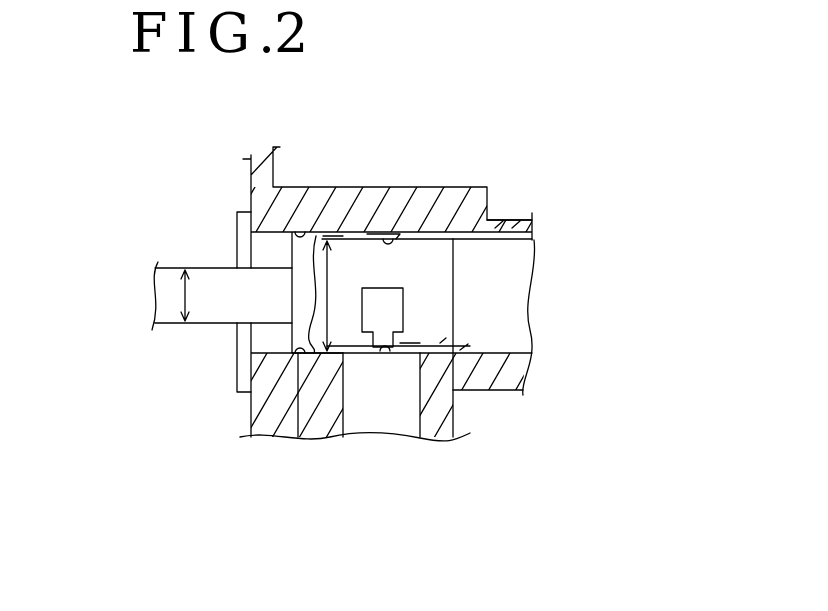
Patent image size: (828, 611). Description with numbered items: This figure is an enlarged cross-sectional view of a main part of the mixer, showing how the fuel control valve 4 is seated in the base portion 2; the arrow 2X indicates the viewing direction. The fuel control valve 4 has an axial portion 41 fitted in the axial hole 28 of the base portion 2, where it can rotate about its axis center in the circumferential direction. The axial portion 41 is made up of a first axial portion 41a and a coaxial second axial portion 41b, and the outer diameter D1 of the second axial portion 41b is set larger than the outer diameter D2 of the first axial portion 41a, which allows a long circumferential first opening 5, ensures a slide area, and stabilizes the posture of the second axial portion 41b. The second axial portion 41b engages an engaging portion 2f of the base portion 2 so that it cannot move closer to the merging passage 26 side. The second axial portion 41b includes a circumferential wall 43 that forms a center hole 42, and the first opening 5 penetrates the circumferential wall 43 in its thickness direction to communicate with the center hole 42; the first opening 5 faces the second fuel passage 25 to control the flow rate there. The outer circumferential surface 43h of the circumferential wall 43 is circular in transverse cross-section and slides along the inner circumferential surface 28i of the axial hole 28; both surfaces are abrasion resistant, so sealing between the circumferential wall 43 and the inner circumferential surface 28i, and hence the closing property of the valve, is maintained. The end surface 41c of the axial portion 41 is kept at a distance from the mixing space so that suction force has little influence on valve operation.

The base portion 2 is at (525, 377).
The engaging portion 2f is at (482, 240).
The view direction 2X is at (565, 357).
The fuel control valve 4 is at (135, 304).
The first opening 5 is at (383, 355).
The second fuel passage 25 is at (360, 433).
The merging passage 26 is at (520, 297).
The axial hole 28 is at (302, 231).
The inner circumferential surface 28i is at (392, 231).
The axial portion 41 is at (166, 267).
The first axial portion 41a is at (208, 267).
The second axial portion 41b is at (425, 231).
The end surface 41c is at (455, 284).
The center hole 42 is at (436, 311).
The circumferential wall 43 is at (493, 221).
The outer circumferential surface 43h is at (368, 231).
The outer diameter of the second axial portion D1 is at (332, 270).
The outer diameter of the first axial portion D2 is at (188, 297).